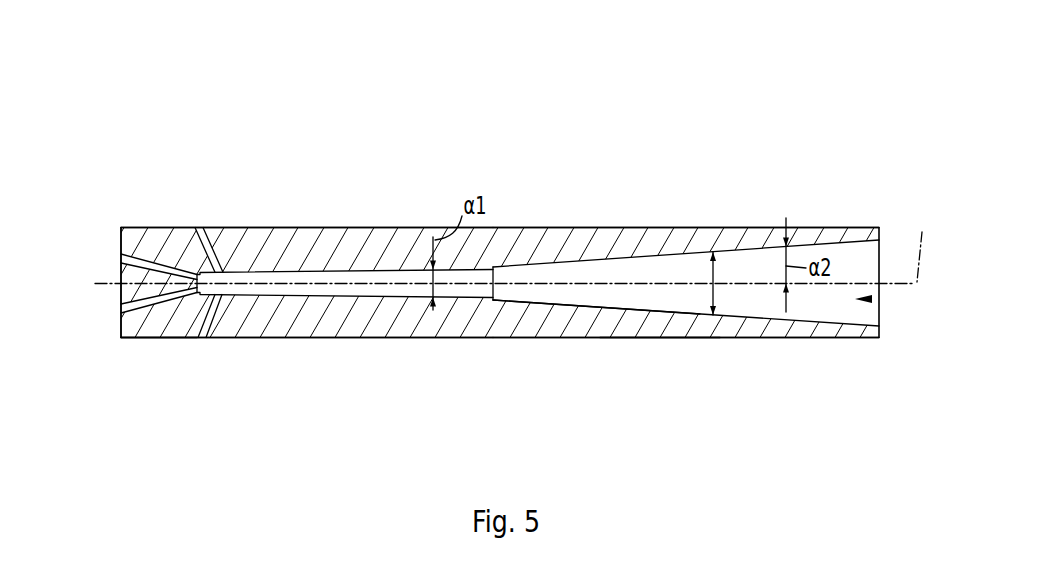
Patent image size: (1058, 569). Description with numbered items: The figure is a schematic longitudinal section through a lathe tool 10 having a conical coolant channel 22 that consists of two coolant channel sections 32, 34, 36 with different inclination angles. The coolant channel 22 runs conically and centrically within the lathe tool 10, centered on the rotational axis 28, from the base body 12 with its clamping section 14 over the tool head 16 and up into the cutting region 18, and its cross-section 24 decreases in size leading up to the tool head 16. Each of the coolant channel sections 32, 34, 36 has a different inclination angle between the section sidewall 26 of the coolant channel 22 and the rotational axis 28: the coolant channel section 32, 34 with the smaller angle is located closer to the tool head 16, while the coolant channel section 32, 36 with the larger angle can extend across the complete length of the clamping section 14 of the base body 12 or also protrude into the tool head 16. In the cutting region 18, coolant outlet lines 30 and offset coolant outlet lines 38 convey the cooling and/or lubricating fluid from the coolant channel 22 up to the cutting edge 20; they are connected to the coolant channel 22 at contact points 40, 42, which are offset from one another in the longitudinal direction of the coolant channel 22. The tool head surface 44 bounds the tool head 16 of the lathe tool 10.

The lathe tool 10 is at (818, 151).
The base body 12 is at (653, 170).
The clamping section 14 is at (657, 328).
The tool head 16 is at (330, 170).
The cutting region 18 is at (165, 332).
The cutting edge 20 is at (127, 227).
The coolant channel 22 is at (872, 300).
The cross-section 24 is at (714, 316).
The section sidewall 26 is at (588, 295).
The rotational axis 28 is at (920, 242).
The coolant outlet line 30 is at (175, 268).
The coolant channel section 32 is at (352, 270).
The coolant channel section 1 34 is at (345, 283).
The coolant channel section 2 36 is at (678, 272).
The offset coolant outlet line 38 is at (211, 227).
The position of the coolant outlet line on the cooling channel 40 is at (211, 305).
The coolant outlet line/cooling channel contact point 42 is at (226, 300).
The tool head surface 44 is at (121, 259).